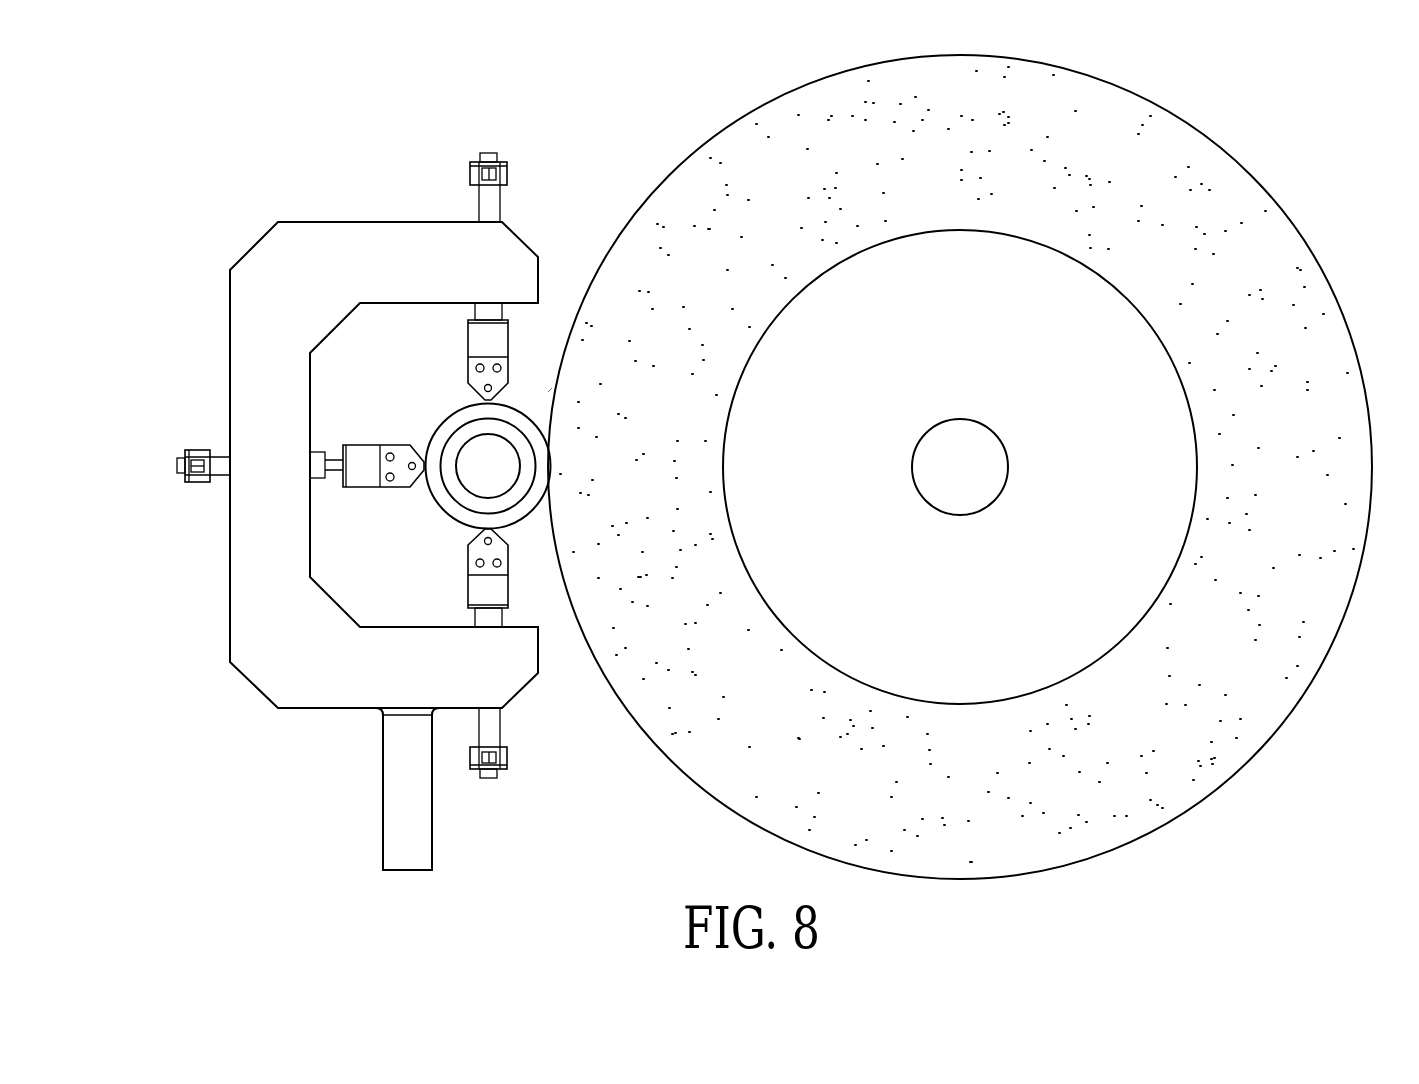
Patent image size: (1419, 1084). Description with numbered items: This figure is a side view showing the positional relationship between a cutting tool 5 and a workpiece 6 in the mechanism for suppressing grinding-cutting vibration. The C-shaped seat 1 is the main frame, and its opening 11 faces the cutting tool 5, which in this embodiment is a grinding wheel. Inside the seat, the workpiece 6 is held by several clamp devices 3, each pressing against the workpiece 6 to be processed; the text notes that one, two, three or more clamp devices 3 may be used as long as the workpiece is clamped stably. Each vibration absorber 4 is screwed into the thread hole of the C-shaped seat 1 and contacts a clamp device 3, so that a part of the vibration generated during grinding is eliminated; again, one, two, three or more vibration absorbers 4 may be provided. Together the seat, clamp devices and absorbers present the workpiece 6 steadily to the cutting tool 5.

The C-shaped seat 1 is at (302, 232).
The clamp device 3 is at (515, 375).
The vibration absorber 4 is at (515, 155).
The cutting tool 5 is at (1210, 245).
The workpiece 6 is at (473, 467).
The opening 11 is at (545, 388).